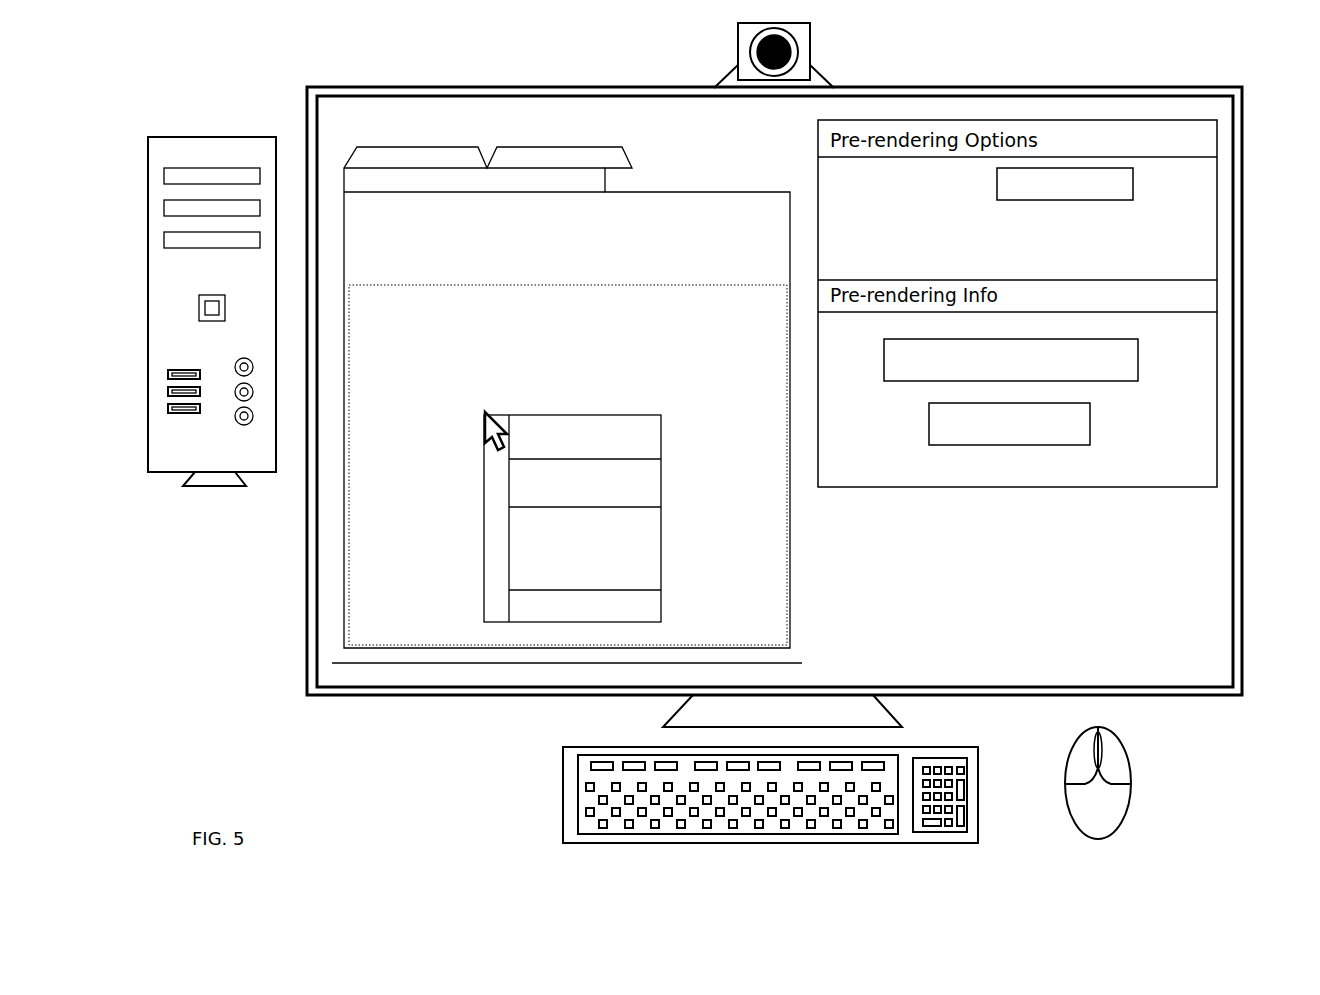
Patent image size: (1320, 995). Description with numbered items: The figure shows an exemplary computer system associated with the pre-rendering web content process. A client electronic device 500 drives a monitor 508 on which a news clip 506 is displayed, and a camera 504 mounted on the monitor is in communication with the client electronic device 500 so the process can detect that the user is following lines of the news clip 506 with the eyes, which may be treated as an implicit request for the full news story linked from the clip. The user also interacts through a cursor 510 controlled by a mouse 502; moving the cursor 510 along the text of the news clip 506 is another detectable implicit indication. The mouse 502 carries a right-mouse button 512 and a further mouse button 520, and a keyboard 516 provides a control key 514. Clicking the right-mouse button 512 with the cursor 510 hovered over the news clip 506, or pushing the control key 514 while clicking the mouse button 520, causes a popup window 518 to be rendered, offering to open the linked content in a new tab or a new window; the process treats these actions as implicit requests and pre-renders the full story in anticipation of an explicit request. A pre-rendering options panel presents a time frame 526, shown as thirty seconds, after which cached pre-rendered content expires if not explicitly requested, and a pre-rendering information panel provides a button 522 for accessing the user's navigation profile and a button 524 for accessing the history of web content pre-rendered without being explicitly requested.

The client electronic device 500 is at (258, 137).
The mouse 502 is at (1126, 822).
The camera 504 is at (810, 57).
The news clip 506 is at (406, 226).
The monitor 508 is at (1240, 695).
The cursor 510 is at (485, 448).
The right-mouse button 512 is at (1128, 752).
The control key 514 is at (562, 766).
The keyboard 516 is at (580, 820).
The popup window 518 is at (484, 544).
The mouse button 520 is at (1070, 752).
The button 522 is at (1139, 350).
The button 524 is at (1091, 421).
The time frame 526 is at (1136, 184).